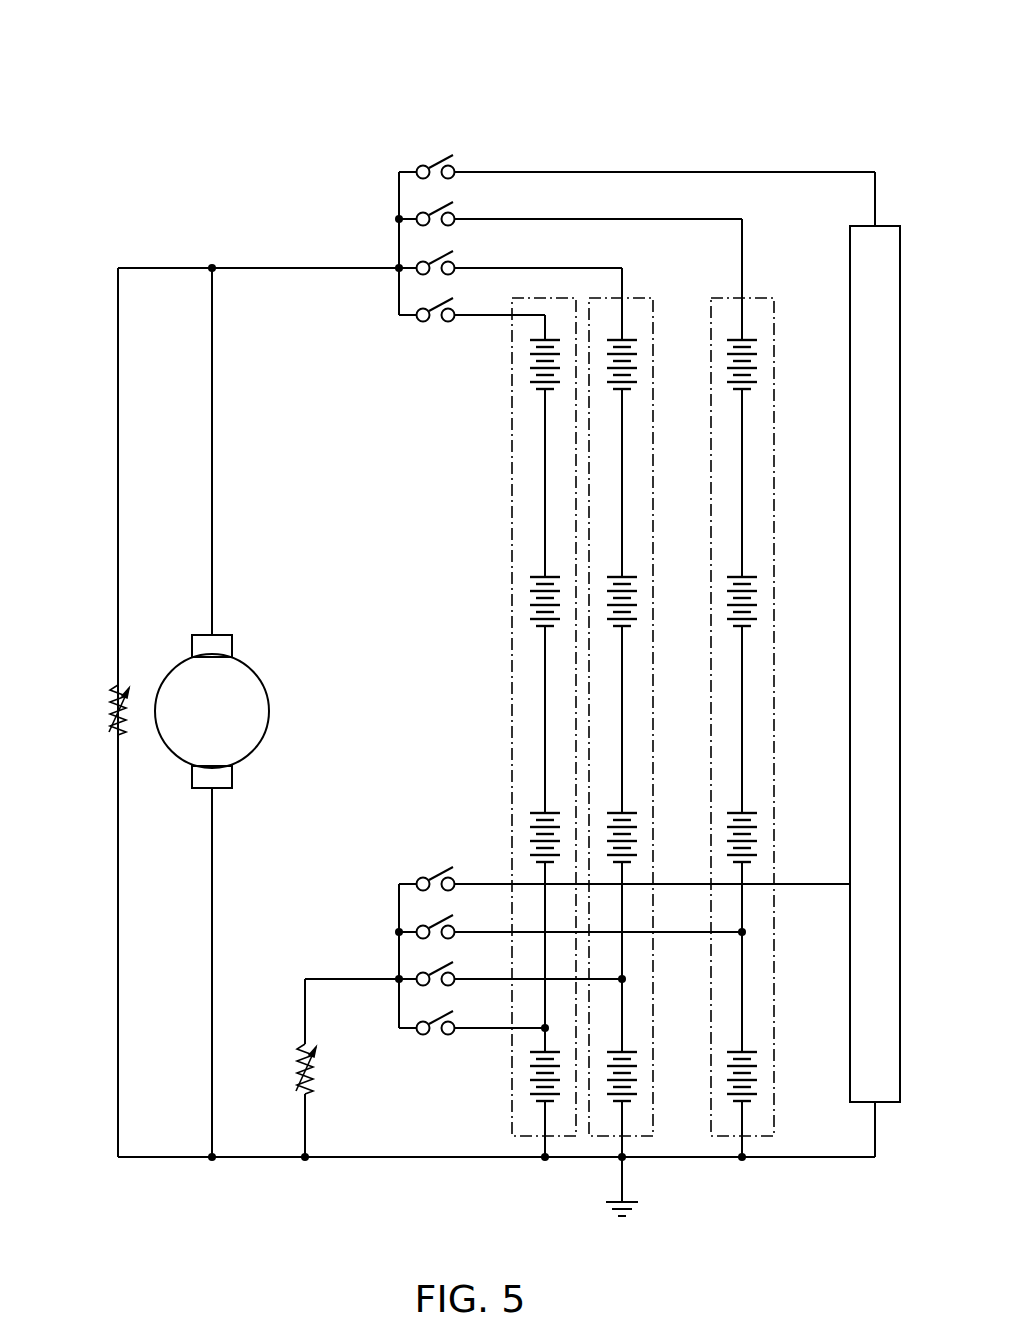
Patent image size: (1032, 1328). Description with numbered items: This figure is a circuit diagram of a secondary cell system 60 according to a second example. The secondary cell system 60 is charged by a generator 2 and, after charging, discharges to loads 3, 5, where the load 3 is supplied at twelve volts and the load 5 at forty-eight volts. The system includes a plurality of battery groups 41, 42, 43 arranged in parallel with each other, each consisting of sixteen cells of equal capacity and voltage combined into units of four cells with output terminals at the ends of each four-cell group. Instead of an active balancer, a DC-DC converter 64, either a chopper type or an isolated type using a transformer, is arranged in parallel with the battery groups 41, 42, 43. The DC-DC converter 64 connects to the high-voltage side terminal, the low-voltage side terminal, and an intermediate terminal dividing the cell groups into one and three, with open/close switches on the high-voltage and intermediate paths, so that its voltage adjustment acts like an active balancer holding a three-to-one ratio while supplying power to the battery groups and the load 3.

The secondary cell system 60 is at (752, 75).
The DC-DC converter 64 is at (862, 611).
The generator 2 is at (198, 720).
The load 5 is at (106, 702).
The load 3 is at (292, 1064).
The battery group 41 is at (528, 1140).
The battery group 42 is at (640, 1140).
The battery group 43 is at (756, 1140).